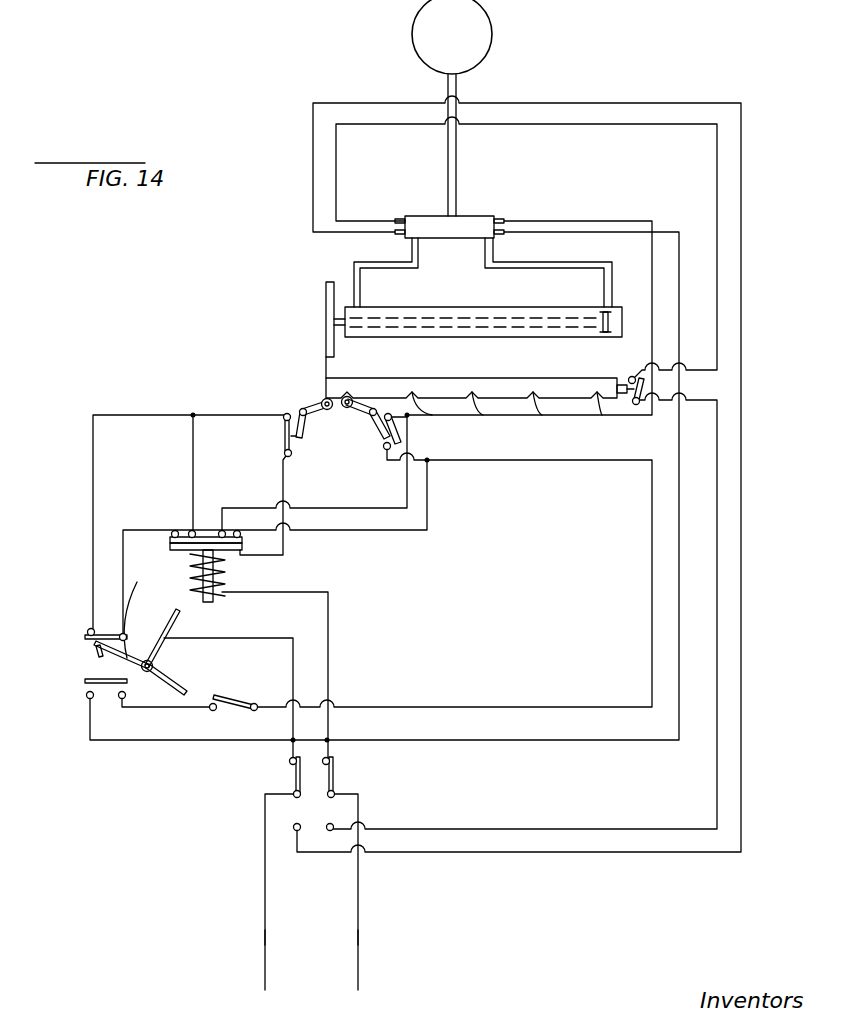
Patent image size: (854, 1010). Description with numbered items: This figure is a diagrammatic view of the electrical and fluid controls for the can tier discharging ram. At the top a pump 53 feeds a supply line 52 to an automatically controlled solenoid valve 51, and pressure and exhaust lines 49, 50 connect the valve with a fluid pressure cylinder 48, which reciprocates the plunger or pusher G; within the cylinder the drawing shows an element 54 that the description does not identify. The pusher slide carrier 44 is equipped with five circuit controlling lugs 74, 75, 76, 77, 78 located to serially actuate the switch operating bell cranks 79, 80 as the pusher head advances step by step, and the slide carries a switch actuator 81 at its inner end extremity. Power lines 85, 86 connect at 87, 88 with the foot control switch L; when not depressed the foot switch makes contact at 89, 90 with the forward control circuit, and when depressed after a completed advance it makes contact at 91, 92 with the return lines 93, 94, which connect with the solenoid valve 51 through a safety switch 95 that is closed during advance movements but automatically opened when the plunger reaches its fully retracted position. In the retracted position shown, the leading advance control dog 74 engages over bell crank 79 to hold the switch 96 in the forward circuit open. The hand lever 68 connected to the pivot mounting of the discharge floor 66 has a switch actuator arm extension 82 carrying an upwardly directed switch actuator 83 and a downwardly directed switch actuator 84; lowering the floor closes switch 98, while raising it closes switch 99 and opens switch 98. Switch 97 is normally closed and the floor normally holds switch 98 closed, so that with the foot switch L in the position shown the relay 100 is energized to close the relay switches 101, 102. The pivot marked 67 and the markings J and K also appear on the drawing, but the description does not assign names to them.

The pump 53 is at (478, 47).
The supply line 52 is at (457, 170).
The solenoid valve 51 is at (482, 213).
The pressure and exhaust line 49 is at (390, 272).
The pressure and exhaust line 50 is at (543, 272).
The fluid pressure cylinder 48 is at (475, 330).
The piston 54 is at (558, 325).
The slide carrier 44 is at (592, 384).
The circuit controlling lug 74 is at (348, 396).
The circuit controlling lug 75 is at (433, 415).
The circuit controlling lug 76 is at (484, 415).
The circuit controlling lug 77 is at (543, 415).
The circuit controlling lug 78 is at (600, 415).
The switch operating bell crank 79 is at (367, 418).
The switch operating bell crank 80 is at (310, 405).
The switch actuator 81 is at (635, 404).
The return line 93 is at (386, 212).
The return line 94 is at (372, 236).
The safety switch 95 is at (647, 370).
The switch 96 is at (392, 456).
The switch 97 is at (284, 429).
The switch 98 is at (90, 628).
The switch 99 is at (87, 686).
The relay 100 is at (228, 578).
The relay switch 101 is at (180, 532).
The relay switch 102 is at (238, 532).
The switch actuator arm extension 82 is at (141, 611).
The pivot 67 is at (154, 665).
The hand lever 68 is at (179, 605).
The discharge floor 66 is at (183, 683).
The upwardly directed switch actuator 83 is at (117, 655).
The downwardly directed switch actuator 84 is at (93, 655).
The power line 85 is at (262, 937).
The power line 86 is at (355, 940).
The connection 87 is at (296, 797).
The connection 88 is at (333, 797).
The contact 89 is at (290, 762).
The contact 90 is at (333, 760).
The contact 91 is at (294, 830).
The contact 92 is at (330, 831).
The plunger or pusher G is at (324, 300).
The lever J is at (177, 623).
The switch K is at (240, 697).
The foot control switch L is at (334, 778).